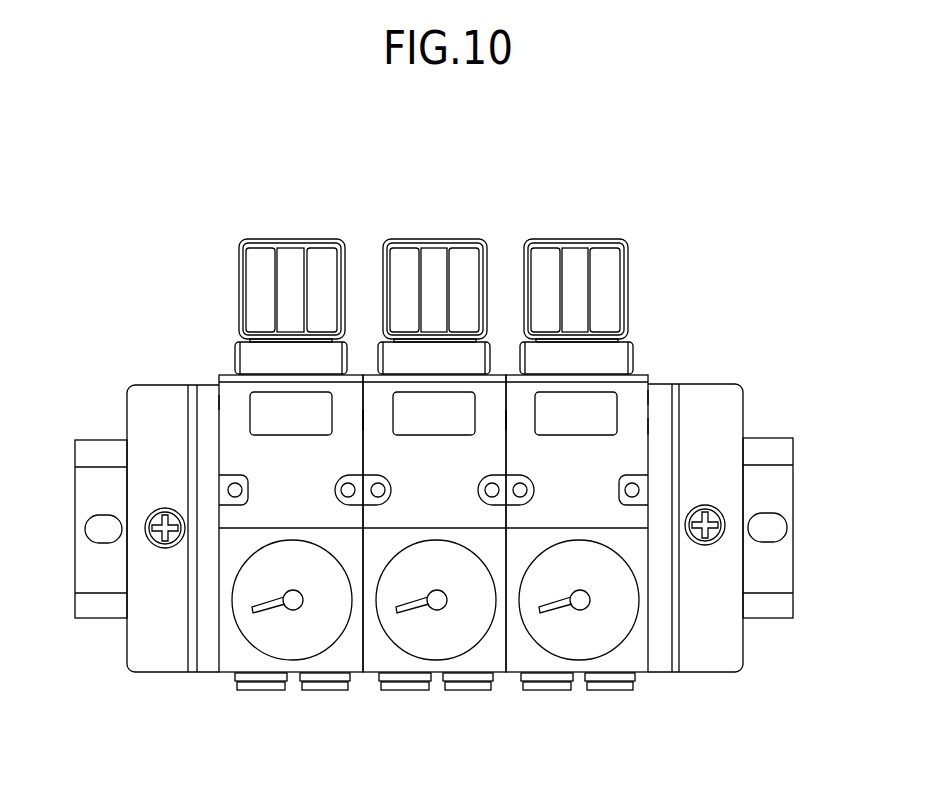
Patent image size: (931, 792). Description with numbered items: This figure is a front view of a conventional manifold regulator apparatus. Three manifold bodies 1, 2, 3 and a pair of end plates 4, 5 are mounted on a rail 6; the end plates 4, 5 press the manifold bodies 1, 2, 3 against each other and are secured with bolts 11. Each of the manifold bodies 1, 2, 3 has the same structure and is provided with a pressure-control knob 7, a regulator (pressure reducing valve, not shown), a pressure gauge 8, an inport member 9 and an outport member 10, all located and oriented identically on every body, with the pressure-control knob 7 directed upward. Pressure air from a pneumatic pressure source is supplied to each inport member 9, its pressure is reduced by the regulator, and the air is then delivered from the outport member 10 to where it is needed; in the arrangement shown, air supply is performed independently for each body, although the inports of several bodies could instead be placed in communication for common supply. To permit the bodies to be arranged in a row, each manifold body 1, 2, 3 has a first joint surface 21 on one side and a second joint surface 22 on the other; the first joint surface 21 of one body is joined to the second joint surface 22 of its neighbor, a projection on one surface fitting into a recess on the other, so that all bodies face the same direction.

The manifold body 1 is at (231, 676).
The manifold body 2 is at (373, 676).
The manifold body 3 is at (517, 676).
The end plate 4 is at (145, 660).
The end plate 5 is at (713, 660).
The rail 6 is at (88, 438).
The pressure-control knob 7 is at (324, 258).
The pressure gauge 8 is at (326, 578).
The inport member 9 is at (320, 692).
The outport member 10 is at (255, 692).
The bolt 11 is at (147, 540).
The first joint surface 21 is at (219, 402).
The second joint surface 22 is at (363, 420).